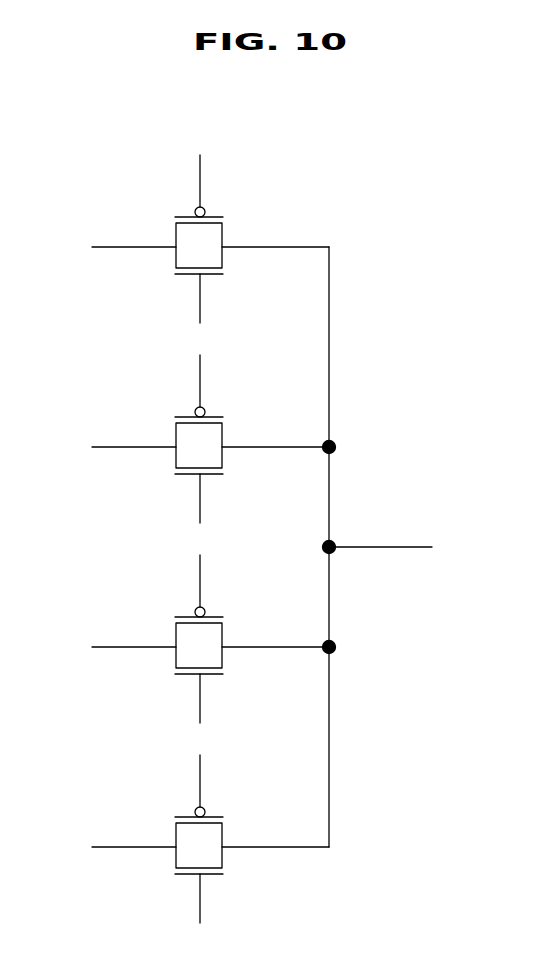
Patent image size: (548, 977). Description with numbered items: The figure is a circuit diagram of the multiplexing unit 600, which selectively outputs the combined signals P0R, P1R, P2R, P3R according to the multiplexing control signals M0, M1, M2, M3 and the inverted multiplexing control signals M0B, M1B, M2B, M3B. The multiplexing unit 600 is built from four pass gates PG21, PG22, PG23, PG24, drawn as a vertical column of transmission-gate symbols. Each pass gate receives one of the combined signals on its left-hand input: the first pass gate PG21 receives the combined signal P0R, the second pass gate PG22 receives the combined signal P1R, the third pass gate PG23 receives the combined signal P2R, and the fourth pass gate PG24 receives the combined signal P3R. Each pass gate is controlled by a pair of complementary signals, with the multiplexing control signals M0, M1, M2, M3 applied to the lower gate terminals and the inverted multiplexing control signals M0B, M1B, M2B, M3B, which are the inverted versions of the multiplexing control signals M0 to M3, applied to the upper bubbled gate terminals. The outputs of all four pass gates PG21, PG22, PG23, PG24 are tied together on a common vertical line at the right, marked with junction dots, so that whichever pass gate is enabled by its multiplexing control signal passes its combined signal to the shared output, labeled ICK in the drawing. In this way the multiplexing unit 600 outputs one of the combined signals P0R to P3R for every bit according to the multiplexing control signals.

The multiplexing unit 600 is at (492, 129).
The pass gate PG21 is at (222, 223).
The pass gate PG22 is at (222, 423).
The pass gate PG23 is at (222, 623).
The pass gate PG24 is at (222, 823).
The multiplexing control signal M0 is at (181, 298).
The multiplexing control signal M1 is at (181, 498).
The multiplexing control signal M2 is at (181, 698).
The multiplexing control signal M3 is at (181, 898).
The inverted multiplexing control signal M0B is at (181, 186).
The inverted multiplexing control signal M1B is at (181, 386).
The inverted multiplexing control signal M2B is at (181, 586).
The inverted multiplexing control signal M3B is at (181, 786).
The combined signal P0R is at (109, 247).
The combined signal P1R is at (109, 447).
The combined signal P2R is at (109, 647).
The combined signal P3R is at (109, 847).
The internal clock output ICK is at (402, 547).